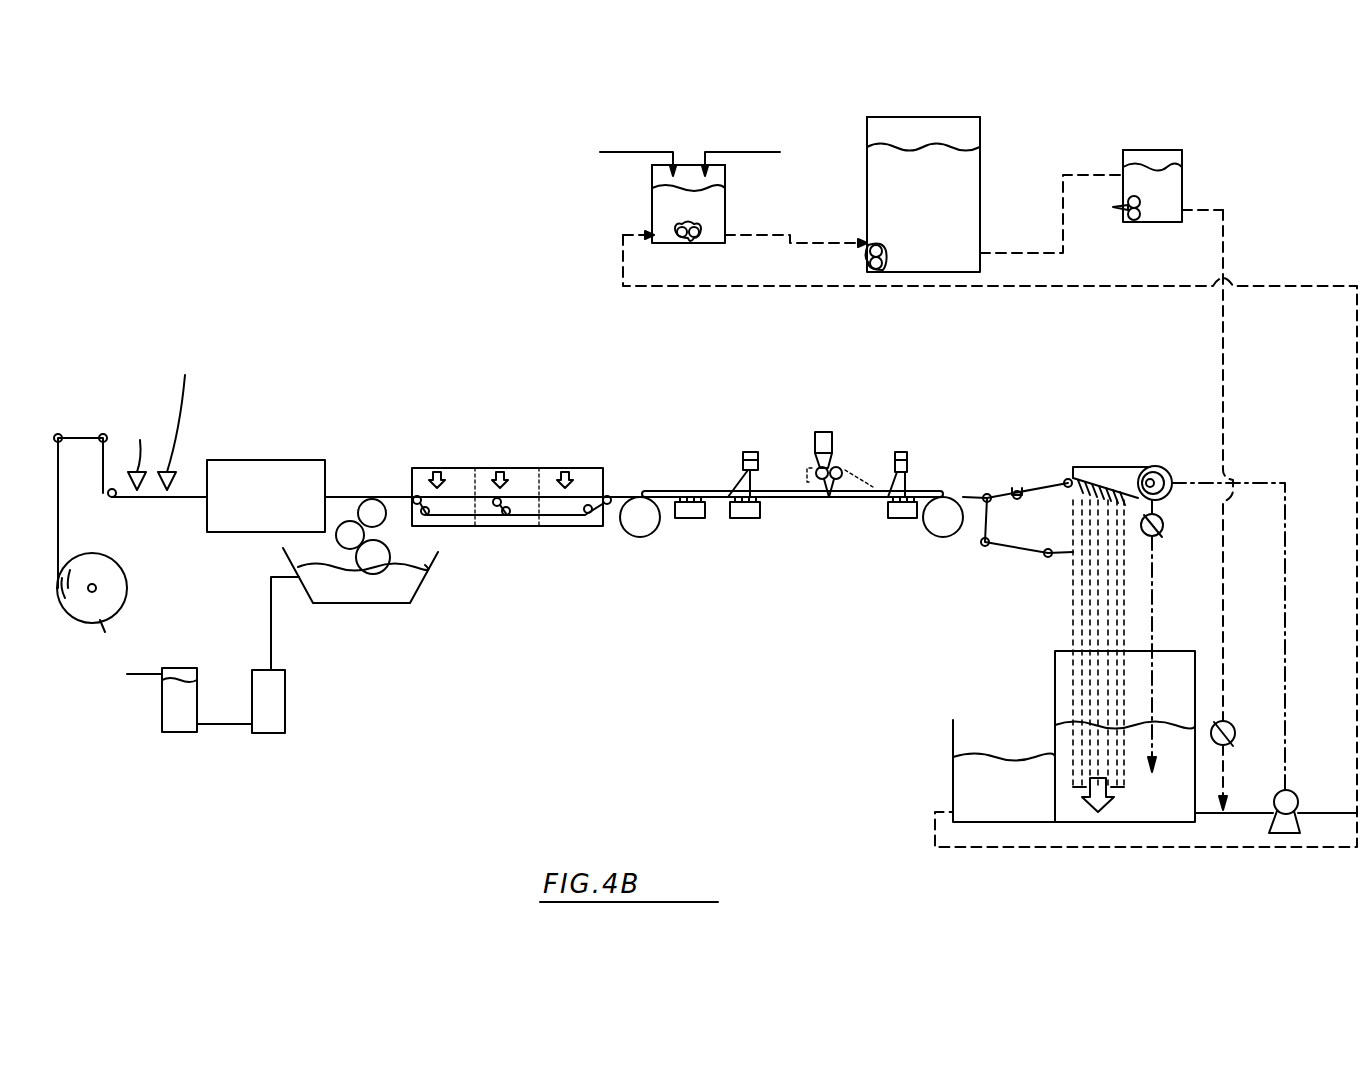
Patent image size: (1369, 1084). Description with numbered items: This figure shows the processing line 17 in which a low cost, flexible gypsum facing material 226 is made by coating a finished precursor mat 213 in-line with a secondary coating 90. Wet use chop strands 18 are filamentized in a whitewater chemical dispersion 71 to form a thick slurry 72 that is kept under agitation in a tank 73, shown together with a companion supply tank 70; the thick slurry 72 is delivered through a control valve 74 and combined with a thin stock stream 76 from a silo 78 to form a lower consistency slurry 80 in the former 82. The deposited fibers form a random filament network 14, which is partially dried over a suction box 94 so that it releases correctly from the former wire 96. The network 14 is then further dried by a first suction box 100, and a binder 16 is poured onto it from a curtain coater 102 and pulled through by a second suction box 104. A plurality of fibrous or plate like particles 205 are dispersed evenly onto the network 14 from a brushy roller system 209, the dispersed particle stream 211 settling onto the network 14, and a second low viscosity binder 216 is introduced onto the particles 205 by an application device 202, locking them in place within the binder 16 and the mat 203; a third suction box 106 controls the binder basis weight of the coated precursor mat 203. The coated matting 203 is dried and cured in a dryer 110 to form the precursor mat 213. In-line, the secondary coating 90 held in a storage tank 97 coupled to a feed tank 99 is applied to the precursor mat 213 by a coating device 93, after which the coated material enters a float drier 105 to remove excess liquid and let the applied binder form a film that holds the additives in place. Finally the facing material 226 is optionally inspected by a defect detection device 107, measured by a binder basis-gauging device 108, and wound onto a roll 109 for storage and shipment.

The random filament network 14 is at (975, 493).
The binder 16 is at (907, 455).
The processing line 17 is at (1297, 129).
The wet use chop strands 18 is at (612, 152).
The supply tank 70 is at (725, 178).
The whitewater chemical dispersion 71 is at (652, 208).
The thick slurry 72 is at (867, 196).
The tank 73 is at (980, 130).
The control valve 74 is at (1233, 727).
The thin stock stream 76 is at (1208, 813).
The silo 78 is at (1140, 813).
The lower consistency slurry 80 is at (1287, 582).
The former 82 is at (1108, 472).
The secondary coating 90 is at (172, 725).
The coating device 93 is at (383, 612).
The suction box 94 is at (1018, 500).
The former wire 96 is at (1003, 548).
The storage tank 97 is at (178, 670).
The feed tank 99 is at (285, 695).
The first suction box 100 is at (902, 518).
The curtain coater 102 is at (900, 490).
The second suction box 104 is at (745, 518).
The float drier 105 is at (267, 467).
The third suction box 106 is at (692, 520).
The defect detection device 107 is at (129, 439).
The binder basis-gauging device 108 is at (185, 420).
The roll 109 is at (100, 617).
The dryer 110 is at (510, 527).
The application device 202 is at (735, 486).
The precursor mat 203 is at (335, 495).
The fibrous/plate like particles 205 is at (830, 430).
The brushy roller system 209 is at (787, 427).
The spray pattern 211 is at (841, 466).
The gypsum facing material 213 is at (400, 497).
The second low viscosity binder 216 is at (743, 460).
The gypsum facing material 226 is at (188, 497).